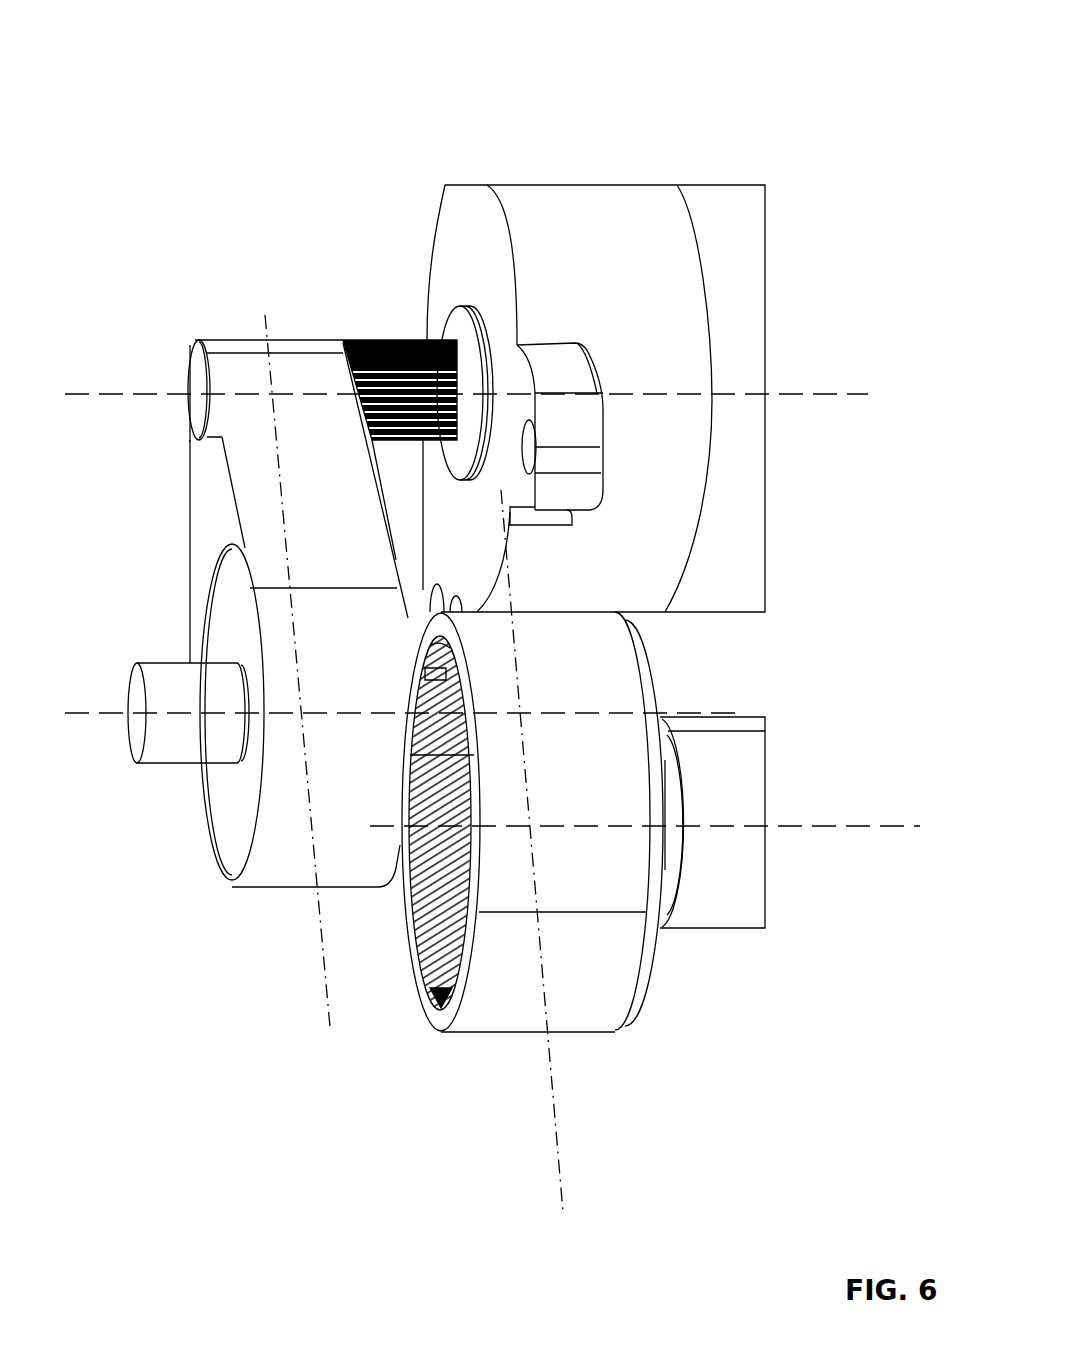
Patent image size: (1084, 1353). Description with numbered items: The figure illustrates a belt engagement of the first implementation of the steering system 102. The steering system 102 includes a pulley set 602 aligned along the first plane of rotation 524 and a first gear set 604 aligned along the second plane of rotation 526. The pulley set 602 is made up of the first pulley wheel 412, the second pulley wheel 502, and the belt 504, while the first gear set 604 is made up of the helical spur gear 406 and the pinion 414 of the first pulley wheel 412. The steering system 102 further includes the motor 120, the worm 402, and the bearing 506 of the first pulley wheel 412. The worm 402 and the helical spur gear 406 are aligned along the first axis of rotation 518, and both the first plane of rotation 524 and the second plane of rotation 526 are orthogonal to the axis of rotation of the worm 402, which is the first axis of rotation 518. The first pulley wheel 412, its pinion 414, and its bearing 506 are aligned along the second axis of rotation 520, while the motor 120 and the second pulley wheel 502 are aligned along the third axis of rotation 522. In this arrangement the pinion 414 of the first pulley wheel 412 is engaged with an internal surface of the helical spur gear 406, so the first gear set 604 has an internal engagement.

The steering system 102 is at (795, 33).
The motor 120 is at (660, 250).
The worm 402 is at (725, 717).
The helical spur gear 406 is at (420, 822).
The first pulley wheel 412 is at (208, 842).
The pinion of the first pulley wheel 414 is at (425, 678).
The second pulley wheel 502 is at (198, 437).
The belt 504 is at (190, 608).
The bearing of the first pulley wheel 506 is at (125, 685).
The first axis of rotation 518 is at (827, 826).
The second axis of rotation 520 is at (555, 713).
The third axis of rotation 522 is at (865, 394).
The first plane of rotation 524 is at (328, 1025).
The second plane of rotation 526 is at (556, 1160).
The pulley set 602 is at (266, 930).
The first gear set 604 is at (511, 851).